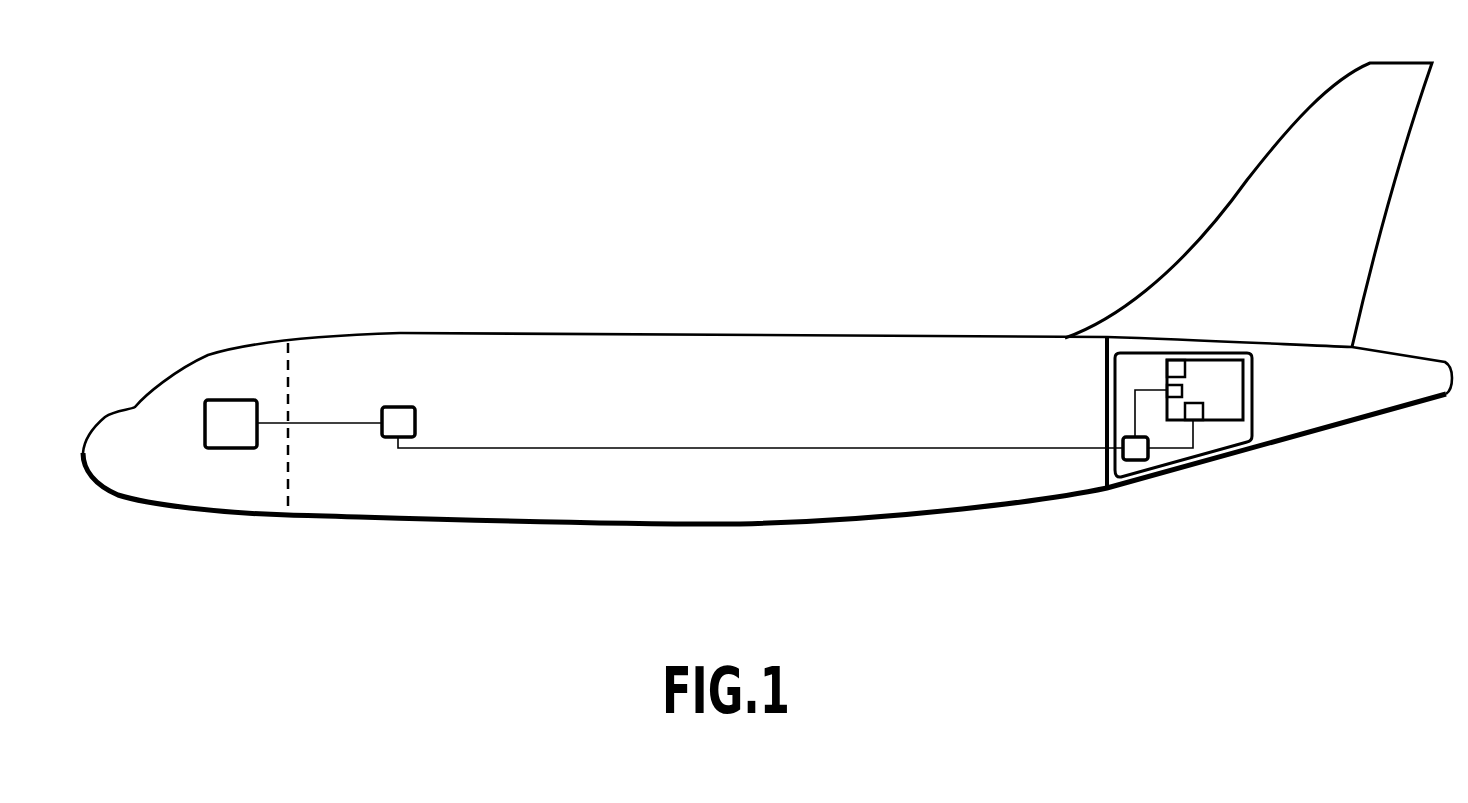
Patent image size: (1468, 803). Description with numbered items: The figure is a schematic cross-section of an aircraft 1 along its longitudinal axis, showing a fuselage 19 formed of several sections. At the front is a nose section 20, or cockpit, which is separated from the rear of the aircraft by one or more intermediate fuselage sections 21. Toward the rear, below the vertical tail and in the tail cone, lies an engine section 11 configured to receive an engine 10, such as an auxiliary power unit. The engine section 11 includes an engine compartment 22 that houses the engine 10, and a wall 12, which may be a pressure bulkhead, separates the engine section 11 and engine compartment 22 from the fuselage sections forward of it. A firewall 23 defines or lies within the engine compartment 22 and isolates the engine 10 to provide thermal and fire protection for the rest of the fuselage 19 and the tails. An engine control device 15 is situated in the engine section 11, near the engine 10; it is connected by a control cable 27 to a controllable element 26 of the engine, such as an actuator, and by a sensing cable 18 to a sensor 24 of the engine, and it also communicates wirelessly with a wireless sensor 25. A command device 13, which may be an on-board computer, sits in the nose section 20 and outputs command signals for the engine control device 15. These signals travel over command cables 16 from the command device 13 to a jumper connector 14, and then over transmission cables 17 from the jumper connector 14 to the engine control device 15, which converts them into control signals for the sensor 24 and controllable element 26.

The aircraft 1 is at (862, 263).
The engine 10 is at (1215, 407).
The engine section 11 is at (1195, 347).
The wall 12 is at (1098, 390).
The command device 13 is at (233, 438).
The jumper connector 14 is at (398, 418).
The engine control device 15 is at (1133, 453).
The command cables 16 is at (330, 427).
The transmission cables 17 is at (565, 452).
The sensing cable 18 is at (1168, 450).
The fuselage 19 is at (883, 525).
The nose section 20 is at (245, 383).
The intermediate fuselage sections 21 is at (697, 378).
The engine compartment 22 is at (1237, 428).
The firewall 23 is at (1255, 387).
The sensor 24 is at (1193, 413).
The wireless sensor 25 is at (1172, 368).
The controllable element 26 is at (1182, 390).
The control cable 27 is at (1135, 395).